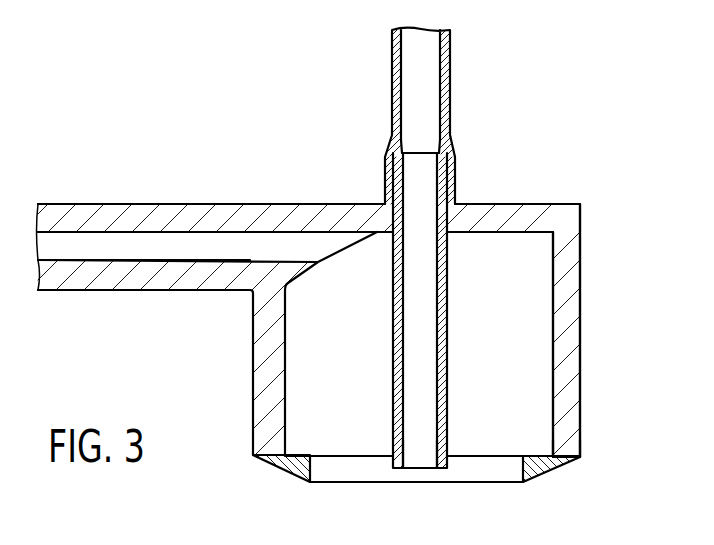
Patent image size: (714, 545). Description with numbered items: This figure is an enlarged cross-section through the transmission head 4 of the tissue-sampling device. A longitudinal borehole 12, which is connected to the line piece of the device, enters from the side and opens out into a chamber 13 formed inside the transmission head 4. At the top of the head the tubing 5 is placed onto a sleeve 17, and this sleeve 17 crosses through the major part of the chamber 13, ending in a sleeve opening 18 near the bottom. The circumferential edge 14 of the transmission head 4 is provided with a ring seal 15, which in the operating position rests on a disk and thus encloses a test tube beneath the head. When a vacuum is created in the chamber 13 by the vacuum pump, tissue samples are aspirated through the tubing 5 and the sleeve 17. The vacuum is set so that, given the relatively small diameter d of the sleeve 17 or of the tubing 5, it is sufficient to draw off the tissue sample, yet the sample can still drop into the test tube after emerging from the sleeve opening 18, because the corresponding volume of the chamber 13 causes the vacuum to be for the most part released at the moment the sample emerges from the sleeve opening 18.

The transmission head 4 is at (535, 206).
The tubing 5 is at (450, 82).
The longitudinal borehole 12 is at (163, 240).
The chamber 13 is at (542, 298).
The circumferential edge 14 is at (565, 448).
The ring seal 15 is at (557, 470).
The sleeve 17 is at (447, 320).
The sleeve opening 18 is at (413, 465).
The diameter d is at (437, 373).